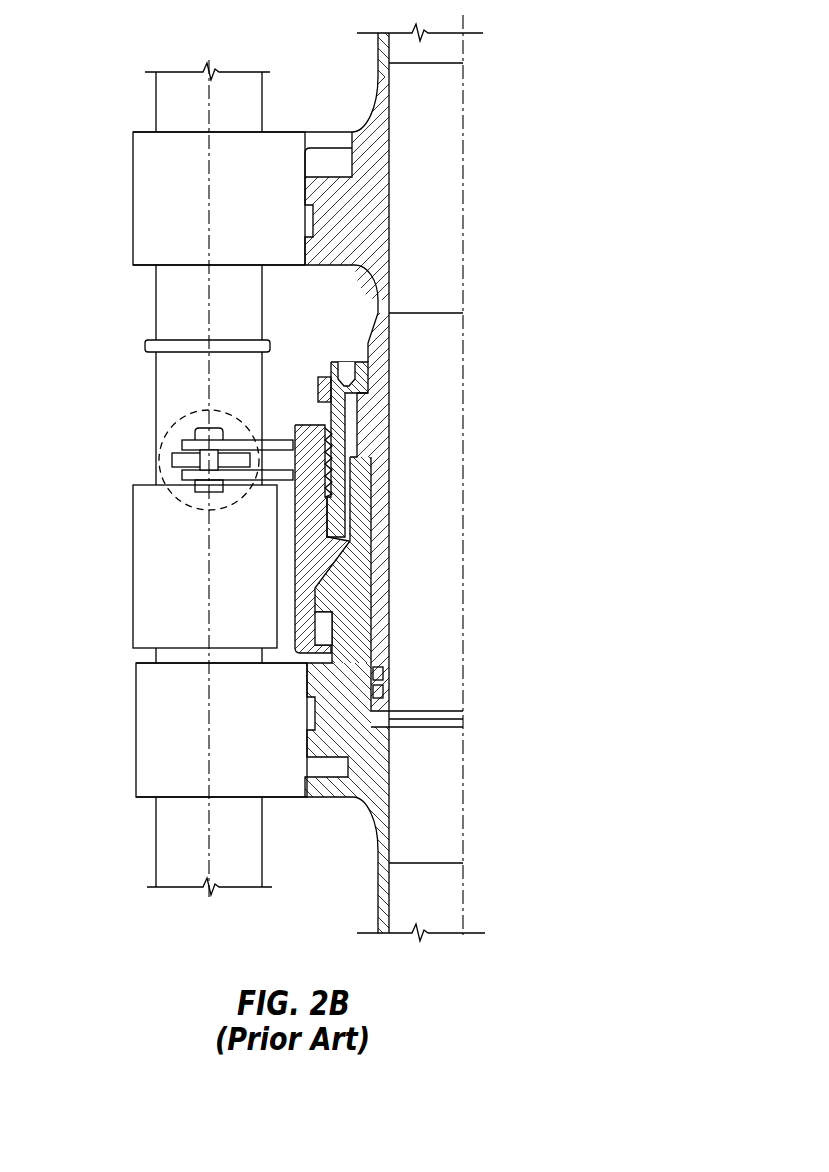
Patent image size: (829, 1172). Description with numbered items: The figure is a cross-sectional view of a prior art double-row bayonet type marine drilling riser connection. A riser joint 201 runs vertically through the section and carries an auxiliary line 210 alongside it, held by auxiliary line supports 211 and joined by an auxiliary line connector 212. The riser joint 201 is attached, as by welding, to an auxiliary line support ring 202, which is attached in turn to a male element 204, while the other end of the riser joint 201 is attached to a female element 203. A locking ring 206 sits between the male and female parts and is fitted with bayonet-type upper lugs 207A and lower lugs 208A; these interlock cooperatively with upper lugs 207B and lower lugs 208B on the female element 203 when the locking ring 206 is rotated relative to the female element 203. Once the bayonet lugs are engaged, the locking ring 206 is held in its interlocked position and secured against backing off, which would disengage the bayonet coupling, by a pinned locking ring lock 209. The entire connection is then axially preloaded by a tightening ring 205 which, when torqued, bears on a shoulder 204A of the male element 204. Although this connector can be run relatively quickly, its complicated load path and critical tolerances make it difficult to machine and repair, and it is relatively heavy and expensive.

The riser joint 201 is at (377, 43).
The auxiliary line support ring 202 is at (380, 208).
The female element 203 is at (386, 798).
The male element 204 is at (383, 525).
The shoulder 204A is at (365, 416).
The tightening ring 205 is at (325, 414).
The locking ring 206 is at (317, 565).
The upper lugs 207A is at (340, 510).
The upper lugs 207B is at (350, 506).
The lower lugs 208A is at (323, 633).
The lower lugs 208B is at (333, 662).
The pinned locking ring lock 209 is at (158, 456).
The auxiliary line 210 is at (163, 102).
The auxiliary line supports 211 is at (142, 190).
The auxiliary line connector 212 is at (143, 561).